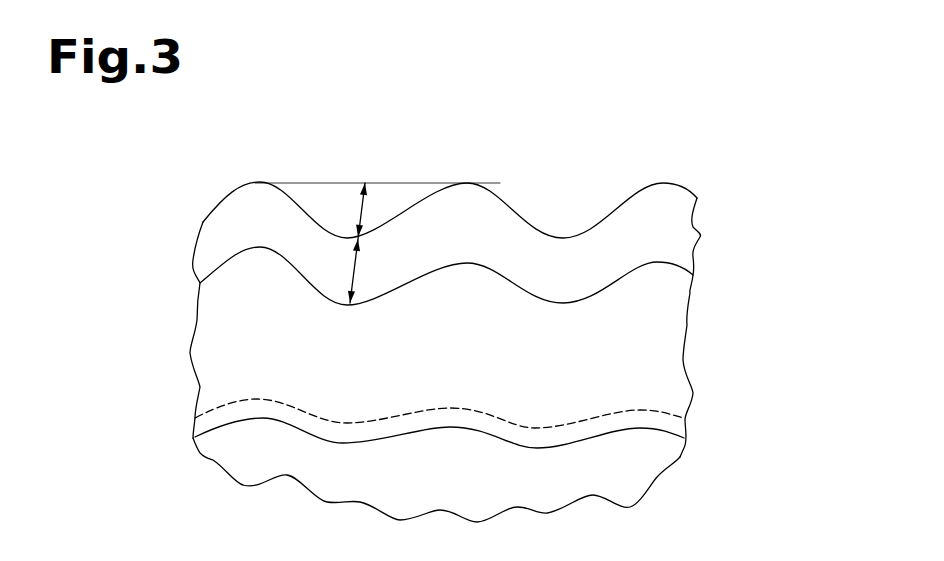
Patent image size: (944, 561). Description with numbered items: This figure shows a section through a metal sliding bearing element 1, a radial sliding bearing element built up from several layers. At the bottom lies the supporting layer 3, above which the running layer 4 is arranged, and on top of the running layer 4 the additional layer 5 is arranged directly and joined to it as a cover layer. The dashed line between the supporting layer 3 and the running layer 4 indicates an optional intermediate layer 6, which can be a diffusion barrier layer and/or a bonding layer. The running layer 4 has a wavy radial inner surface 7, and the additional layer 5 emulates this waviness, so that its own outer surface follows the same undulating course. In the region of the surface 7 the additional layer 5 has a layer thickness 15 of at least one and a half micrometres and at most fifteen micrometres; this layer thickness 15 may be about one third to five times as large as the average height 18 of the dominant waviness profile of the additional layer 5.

The sliding bearing element 1 is at (792, 175).
The supporting layer 3 is at (647, 457).
The running layer 4 is at (655, 342).
The additional layer 5 is at (668, 222).
The intermediate layer 6 is at (687, 420).
The surface 7 is at (517, 283).
The layer thickness 15 is at (347, 260).
The average height 18 is at (353, 198).